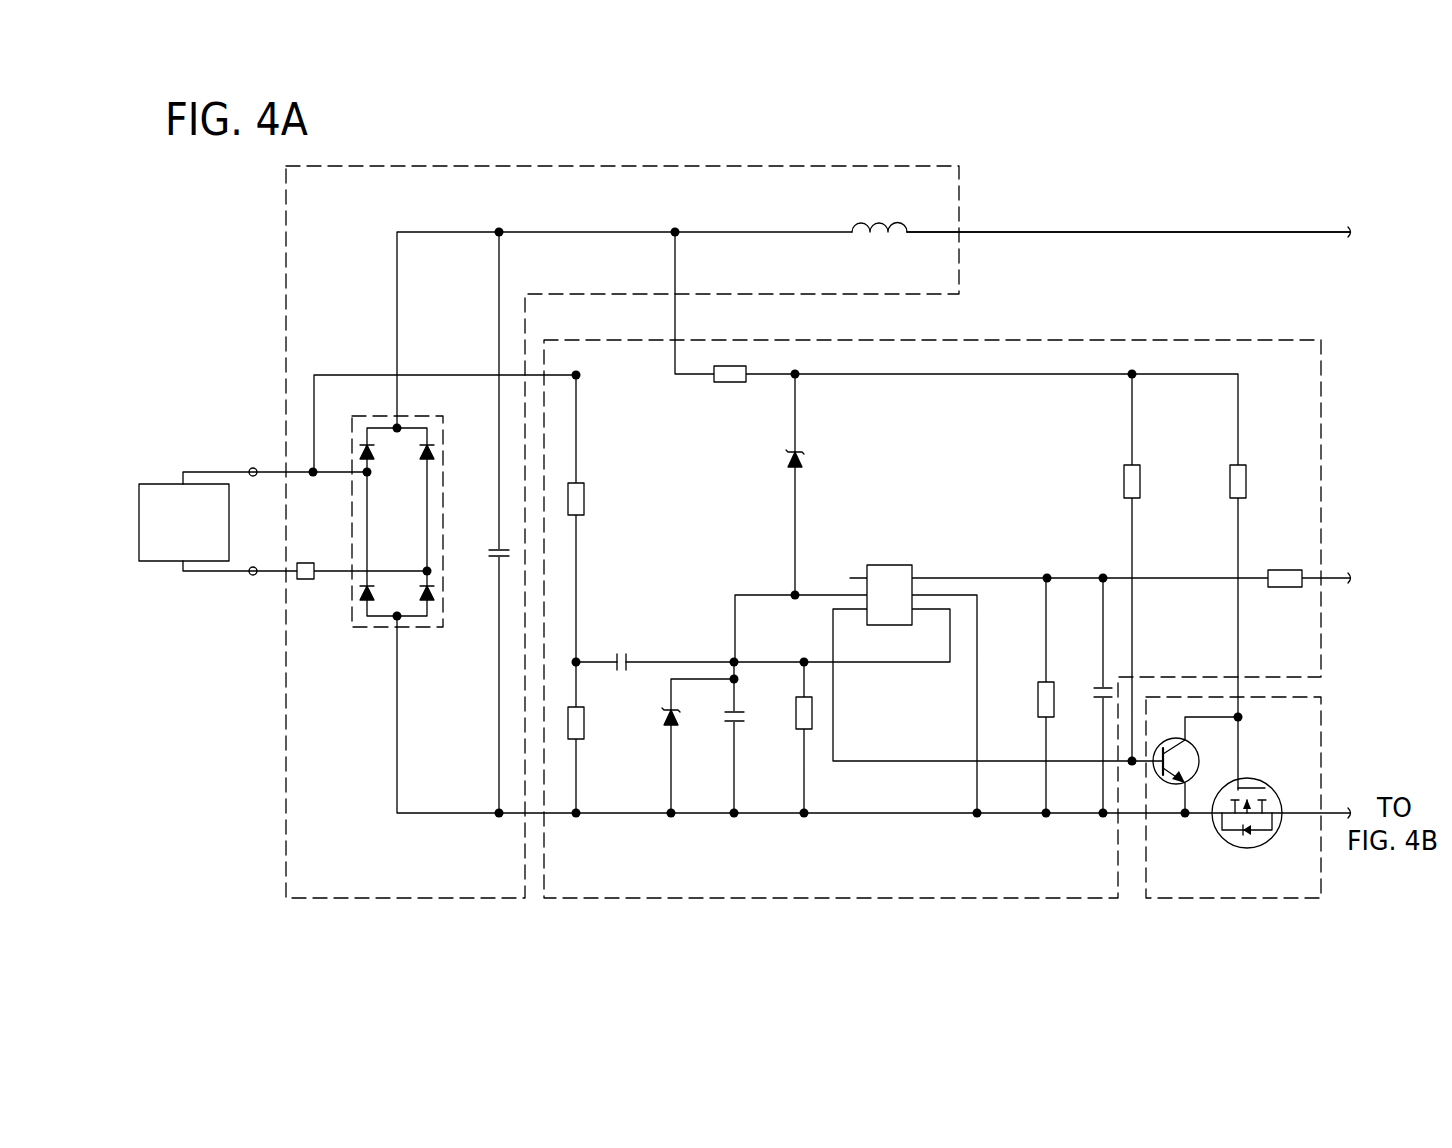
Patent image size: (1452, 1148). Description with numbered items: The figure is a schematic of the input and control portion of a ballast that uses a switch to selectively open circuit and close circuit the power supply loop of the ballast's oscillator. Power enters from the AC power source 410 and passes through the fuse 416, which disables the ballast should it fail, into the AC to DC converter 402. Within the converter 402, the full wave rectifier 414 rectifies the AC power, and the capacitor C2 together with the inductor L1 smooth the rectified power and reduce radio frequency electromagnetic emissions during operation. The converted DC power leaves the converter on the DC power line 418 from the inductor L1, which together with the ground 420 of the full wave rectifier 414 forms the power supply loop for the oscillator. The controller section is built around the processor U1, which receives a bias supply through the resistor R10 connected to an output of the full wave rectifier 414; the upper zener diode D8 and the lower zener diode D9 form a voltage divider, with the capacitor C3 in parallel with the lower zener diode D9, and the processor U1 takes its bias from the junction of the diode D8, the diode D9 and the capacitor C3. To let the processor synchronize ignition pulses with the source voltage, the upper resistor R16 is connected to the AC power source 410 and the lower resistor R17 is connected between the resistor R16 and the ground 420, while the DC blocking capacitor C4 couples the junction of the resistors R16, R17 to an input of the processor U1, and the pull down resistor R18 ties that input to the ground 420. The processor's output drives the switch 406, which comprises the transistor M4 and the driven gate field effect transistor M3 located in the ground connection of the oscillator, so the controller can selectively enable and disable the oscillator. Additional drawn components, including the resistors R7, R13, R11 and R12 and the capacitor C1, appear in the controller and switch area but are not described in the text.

The AC to DC converter 402 is at (527, 165).
The switch 406 is at (1325, 754).
The AC power source 410 is at (165, 481).
The full wave rectifier 414 is at (412, 628).
The fuse 416 is at (305, 581).
The DC power line 418 is at (1106, 227).
The ground 420 is at (707, 816).
The inductor L1 is at (859, 216).
The capacitor C2 is at (485, 537).
The resistor R10 is at (730, 393).
The upper zener diode D8 is at (817, 462).
The upper resistor R16 is at (601, 499).
The lower resistor R17 is at (603, 724).
The DC blocking capacitor C4 is at (624, 645).
The lower zener diode D9 is at (684, 734).
The capacitor C3 is at (721, 702).
The pull down resistor R18 is at (784, 729).
The processor U1 is at (889, 578).
The resistor R7 is at (1112, 481).
The resistor R13 is at (1210, 481).
The resistor R11 is at (1283, 562).
The resistor R12 is at (1022, 699).
The capacitor C1 is at (1090, 676).
The transistor M4 is at (1191, 753).
The driven gate field effect transistor M3 is at (1254, 798).